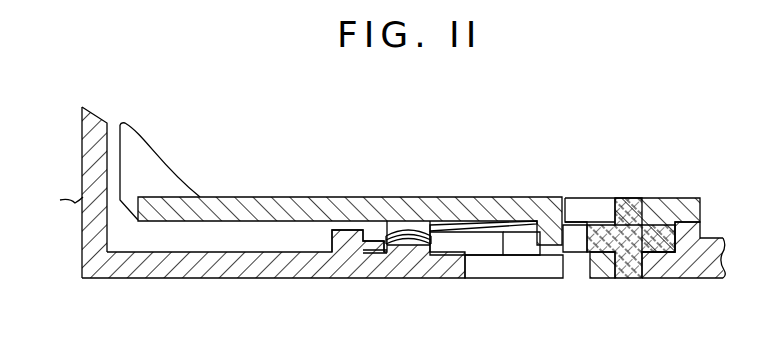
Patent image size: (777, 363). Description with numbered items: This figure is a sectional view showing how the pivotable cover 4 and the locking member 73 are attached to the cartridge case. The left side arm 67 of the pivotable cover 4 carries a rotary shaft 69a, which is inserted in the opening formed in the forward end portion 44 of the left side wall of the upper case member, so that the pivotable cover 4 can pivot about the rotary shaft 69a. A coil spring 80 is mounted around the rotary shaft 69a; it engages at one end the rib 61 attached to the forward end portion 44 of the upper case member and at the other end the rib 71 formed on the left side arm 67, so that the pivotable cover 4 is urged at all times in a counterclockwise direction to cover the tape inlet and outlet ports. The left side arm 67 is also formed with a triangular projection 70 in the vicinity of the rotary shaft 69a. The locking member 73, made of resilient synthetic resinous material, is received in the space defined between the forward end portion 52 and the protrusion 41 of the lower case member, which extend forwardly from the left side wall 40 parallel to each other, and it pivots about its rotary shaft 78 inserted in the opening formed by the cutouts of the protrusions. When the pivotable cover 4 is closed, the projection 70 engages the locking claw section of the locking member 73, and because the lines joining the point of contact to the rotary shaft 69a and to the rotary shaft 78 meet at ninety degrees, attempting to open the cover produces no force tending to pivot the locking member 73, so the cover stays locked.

The pivotable cover 4 is at (83, 197).
The forward end portion 44 is at (357, 197).
The coil spring 80 is at (440, 222).
The forward end portion 52 is at (653, 198).
The rib 71 is at (332, 240).
The left side arm 67 is at (277, 278).
The rotary shaft 69a is at (400, 250).
The triangular projection 70 is at (498, 230).
The rib 61 is at (527, 234).
The locking member 73 is at (571, 243).
The rotary shaft 78 is at (628, 278).
The protrusion 41 is at (652, 278).
The left side wall 40 is at (708, 278).